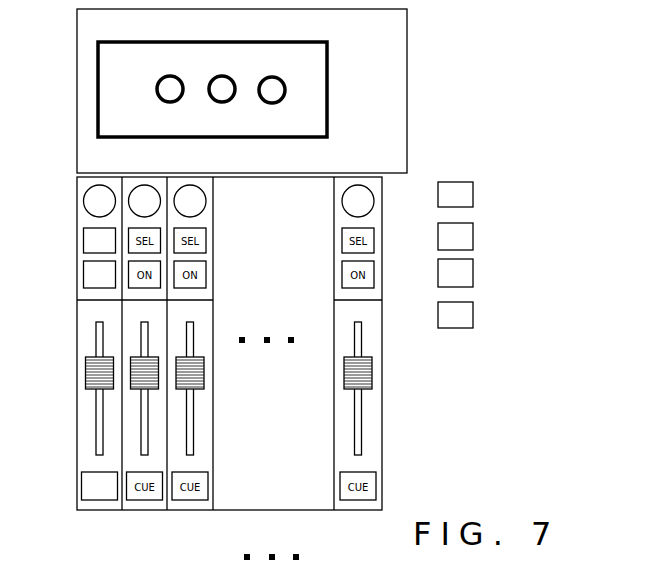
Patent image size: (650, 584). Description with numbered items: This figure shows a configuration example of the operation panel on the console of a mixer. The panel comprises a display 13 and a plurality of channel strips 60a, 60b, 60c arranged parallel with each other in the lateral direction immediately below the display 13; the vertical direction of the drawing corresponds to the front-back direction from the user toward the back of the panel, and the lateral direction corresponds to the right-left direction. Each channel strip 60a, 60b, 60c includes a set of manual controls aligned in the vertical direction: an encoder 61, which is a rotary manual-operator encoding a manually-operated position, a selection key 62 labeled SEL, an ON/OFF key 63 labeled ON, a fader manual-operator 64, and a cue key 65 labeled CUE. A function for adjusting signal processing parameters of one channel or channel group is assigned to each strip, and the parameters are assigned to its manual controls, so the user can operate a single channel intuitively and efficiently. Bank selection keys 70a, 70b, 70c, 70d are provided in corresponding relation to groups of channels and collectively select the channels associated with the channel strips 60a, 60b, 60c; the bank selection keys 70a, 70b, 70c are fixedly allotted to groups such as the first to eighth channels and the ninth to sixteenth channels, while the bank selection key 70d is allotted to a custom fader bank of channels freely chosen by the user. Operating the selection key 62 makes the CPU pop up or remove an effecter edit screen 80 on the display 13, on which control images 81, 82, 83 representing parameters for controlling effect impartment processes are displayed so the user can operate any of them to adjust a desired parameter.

The display 13 is at (407, 62).
The effecter edit screen 80 is at (98, 78).
The control image 81 is at (157, 89).
The control image 82 is at (212, 92).
The control image 83 is at (260, 95).
The channel strip 60a is at (64, 372).
The channel strip 60b is at (138, 505).
The channel strip 60c is at (185, 505).
The encoder 61 is at (84, 201).
The selection key 62 is at (84, 241).
The ON/OFF key 63 is at (84, 275).
The fader manual-operator 64 is at (86, 378).
The cue key 65 is at (82, 490).
The bank selection key 70a is at (473, 192).
The bank selection key 70b is at (473, 232).
The bank selection key 70c is at (473, 272).
The bank selection key 70d is at (473, 312).